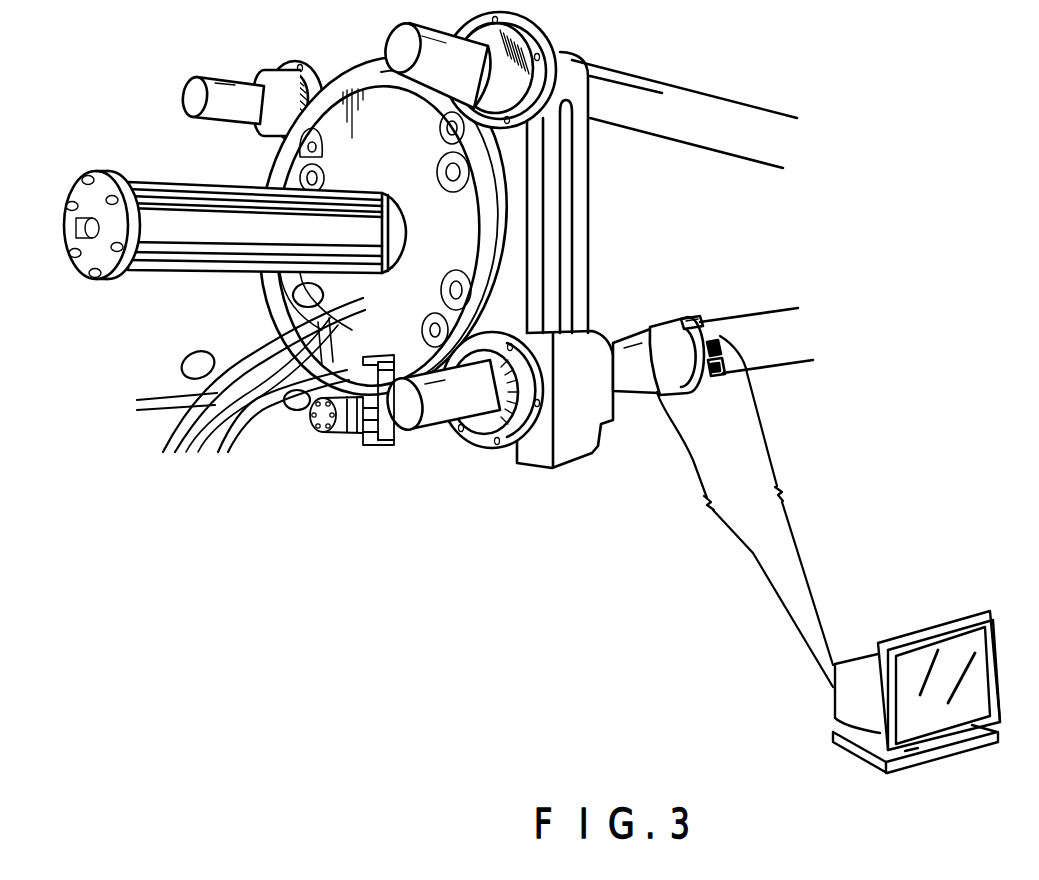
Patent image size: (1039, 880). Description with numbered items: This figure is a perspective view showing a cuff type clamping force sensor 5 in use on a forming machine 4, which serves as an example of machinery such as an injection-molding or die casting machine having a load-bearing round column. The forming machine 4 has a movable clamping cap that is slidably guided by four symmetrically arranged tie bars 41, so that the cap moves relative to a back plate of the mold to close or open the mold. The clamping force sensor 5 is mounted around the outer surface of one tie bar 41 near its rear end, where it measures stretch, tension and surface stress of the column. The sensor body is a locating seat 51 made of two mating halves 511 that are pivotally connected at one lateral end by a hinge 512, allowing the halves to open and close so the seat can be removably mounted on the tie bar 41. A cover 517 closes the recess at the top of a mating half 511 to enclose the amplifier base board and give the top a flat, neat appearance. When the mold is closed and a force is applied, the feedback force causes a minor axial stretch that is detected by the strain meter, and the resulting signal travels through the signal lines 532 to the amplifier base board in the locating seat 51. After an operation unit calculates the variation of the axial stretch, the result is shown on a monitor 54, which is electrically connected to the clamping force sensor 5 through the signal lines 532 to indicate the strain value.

The forming machine 4 is at (430, 312).
The tie bar 41 is at (417, 417).
The clamping force sensor 5 is at (730, 383).
The locating seat 51 is at (655, 316).
The mating half 511 is at (684, 392).
The hinge 512 is at (727, 373).
The cover 517 is at (699, 318).
The signal lines 532 is at (753, 555).
The monitor 54 is at (913, 633).